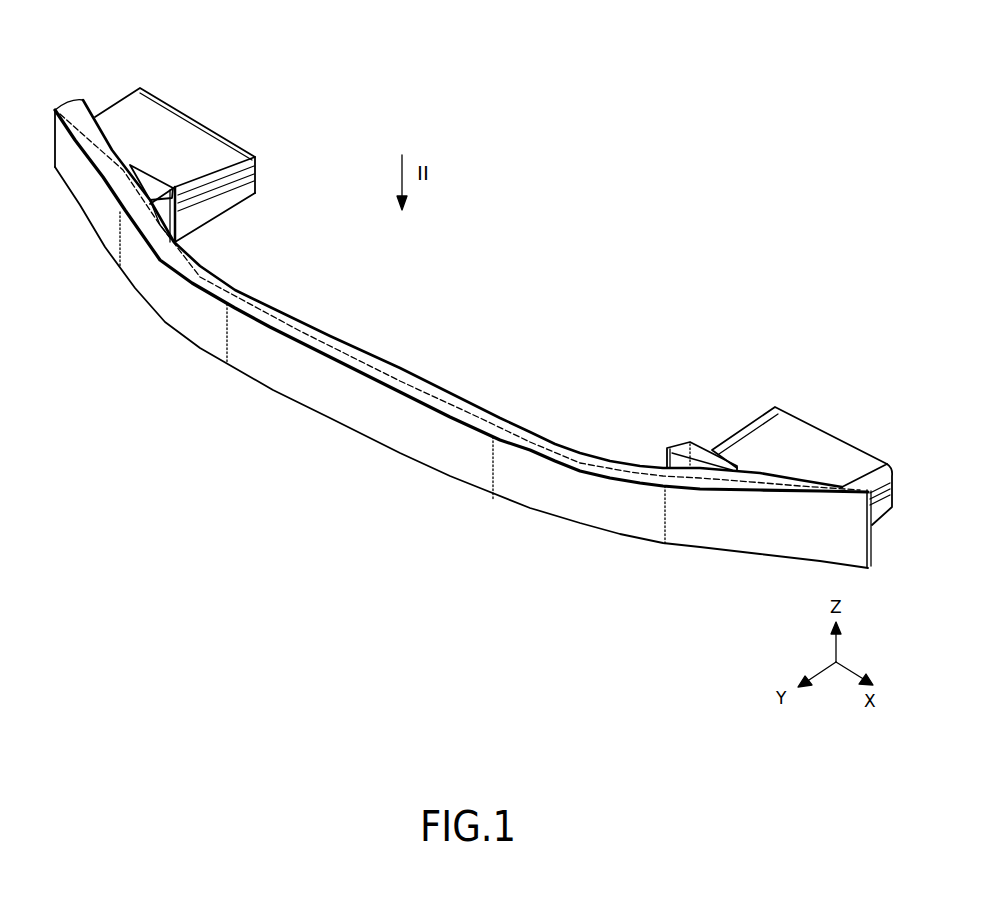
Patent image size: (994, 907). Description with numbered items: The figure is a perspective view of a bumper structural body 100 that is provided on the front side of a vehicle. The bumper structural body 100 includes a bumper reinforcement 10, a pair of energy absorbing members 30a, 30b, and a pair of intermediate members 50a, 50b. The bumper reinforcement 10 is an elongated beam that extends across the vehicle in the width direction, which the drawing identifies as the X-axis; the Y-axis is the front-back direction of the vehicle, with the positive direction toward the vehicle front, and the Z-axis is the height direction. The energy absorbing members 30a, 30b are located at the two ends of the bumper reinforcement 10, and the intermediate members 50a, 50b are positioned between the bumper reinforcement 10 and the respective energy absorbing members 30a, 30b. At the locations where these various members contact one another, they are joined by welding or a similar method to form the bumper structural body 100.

The bumper reinforcement 10 is at (463, 334).
The energy absorbing member 30a is at (802, 432).
The energy absorbing member 30b is at (175, 135).
The intermediate member 50a is at (707, 401).
The intermediate member 50b is at (116, 271).
The bumper structural body 100 is at (717, 247).